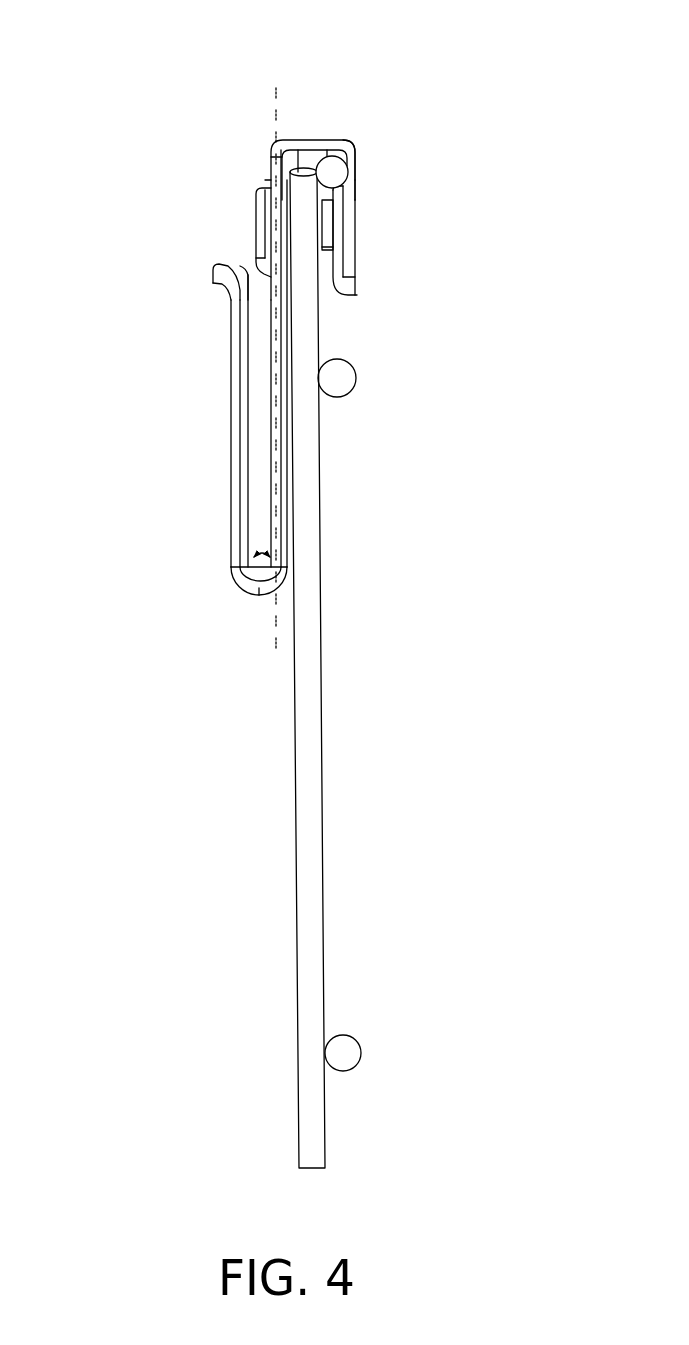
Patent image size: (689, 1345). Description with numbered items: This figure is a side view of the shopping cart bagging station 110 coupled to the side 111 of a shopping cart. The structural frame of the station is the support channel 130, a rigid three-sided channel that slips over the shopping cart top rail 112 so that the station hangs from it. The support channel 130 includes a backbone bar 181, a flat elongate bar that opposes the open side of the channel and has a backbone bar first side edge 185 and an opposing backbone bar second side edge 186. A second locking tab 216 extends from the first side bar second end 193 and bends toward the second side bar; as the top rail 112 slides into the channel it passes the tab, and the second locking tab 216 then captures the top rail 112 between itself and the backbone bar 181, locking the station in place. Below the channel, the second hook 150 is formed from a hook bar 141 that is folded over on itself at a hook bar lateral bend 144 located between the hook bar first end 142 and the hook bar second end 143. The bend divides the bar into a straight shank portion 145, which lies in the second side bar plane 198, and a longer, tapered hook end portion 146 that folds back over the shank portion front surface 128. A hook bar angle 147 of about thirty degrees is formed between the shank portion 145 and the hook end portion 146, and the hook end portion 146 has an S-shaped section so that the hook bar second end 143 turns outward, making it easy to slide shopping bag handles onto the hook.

The shopping cart bagging station 110 is at (185, 110).
The side 111 is at (300, 668).
The shopping cart top rail 112 is at (334, 171).
The shank portion front surface 128 is at (272, 480).
The support channel 130 is at (395, 63).
The hook bar 141 is at (205, 390).
The hook bar first end 142 is at (273, 295).
The hook bar second end 143 is at (215, 264).
The hook bar lateral bend 144 is at (253, 596).
The shank portion 145 is at (288, 447).
The hook end portion 146 is at (229, 507).
The hook bar angle 147 is at (262, 552).
The second hook 150 is at (212, 632).
The backbone bar 181 is at (309, 140).
The backbone bar first side edge 185 is at (350, 145).
The backbone bar second side edge 186 is at (272, 145).
The first side bar second end 193 is at (352, 176).
The second side bar plane 198 is at (274, 642).
The second locking tab 216 is at (346, 222).